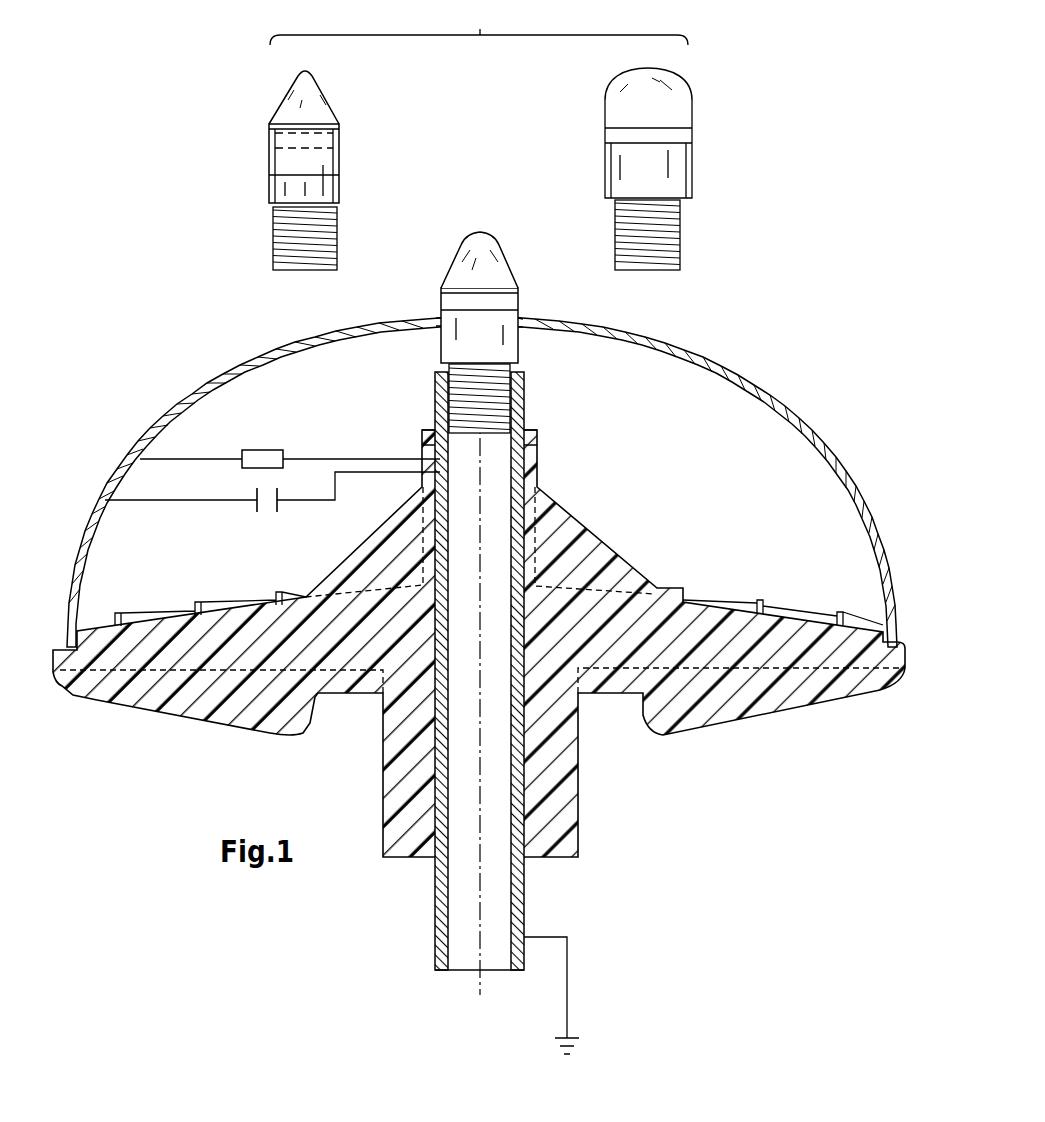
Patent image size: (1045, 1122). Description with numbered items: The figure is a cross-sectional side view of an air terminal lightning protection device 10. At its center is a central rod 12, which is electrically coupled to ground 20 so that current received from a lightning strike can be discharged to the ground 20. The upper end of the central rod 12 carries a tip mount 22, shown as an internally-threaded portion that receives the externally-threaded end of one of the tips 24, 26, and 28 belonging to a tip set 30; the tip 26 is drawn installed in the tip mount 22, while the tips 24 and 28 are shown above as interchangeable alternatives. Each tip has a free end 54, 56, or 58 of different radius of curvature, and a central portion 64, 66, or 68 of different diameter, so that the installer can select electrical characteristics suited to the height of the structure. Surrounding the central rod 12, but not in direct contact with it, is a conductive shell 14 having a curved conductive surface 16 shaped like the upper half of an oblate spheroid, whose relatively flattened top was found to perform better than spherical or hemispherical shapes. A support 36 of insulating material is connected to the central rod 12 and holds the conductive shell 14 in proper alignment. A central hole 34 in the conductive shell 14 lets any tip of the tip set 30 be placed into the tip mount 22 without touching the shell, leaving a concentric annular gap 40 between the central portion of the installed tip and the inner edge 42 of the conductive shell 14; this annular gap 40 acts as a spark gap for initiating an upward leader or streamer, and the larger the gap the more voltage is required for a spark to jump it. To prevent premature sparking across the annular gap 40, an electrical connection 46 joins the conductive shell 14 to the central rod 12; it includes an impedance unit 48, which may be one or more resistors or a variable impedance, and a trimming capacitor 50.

The air terminal lightning protection device 10 is at (170, 282).
The central rod 12 is at (524, 890).
The conductive shell 14 is at (745, 365).
The curved conductive surface 16 is at (800, 416).
The ground 20 is at (572, 1038).
The tip mount 22 is at (545, 365).
The tip 24 is at (258, 86).
The tip 26 is at (457, 222).
The tip 28 is at (700, 68).
The tip set 30 is at (479, 25).
The central hole 34 is at (437, 285).
The support 36 is at (167, 729).
The annular gap 40 is at (428, 284).
The inner edge 42 is at (436, 318).
The electrical connection 46 is at (205, 524).
The impedance unit 48 is at (275, 449).
The trimming capacitor 50 is at (270, 520).
The free end 54 is at (306, 72).
The free end 56 is at (487, 232).
The free end 58 is at (641, 70).
The central portion 64 is at (270, 163).
The central portion 66 is at (441, 343).
The central portion 68 is at (693, 163).